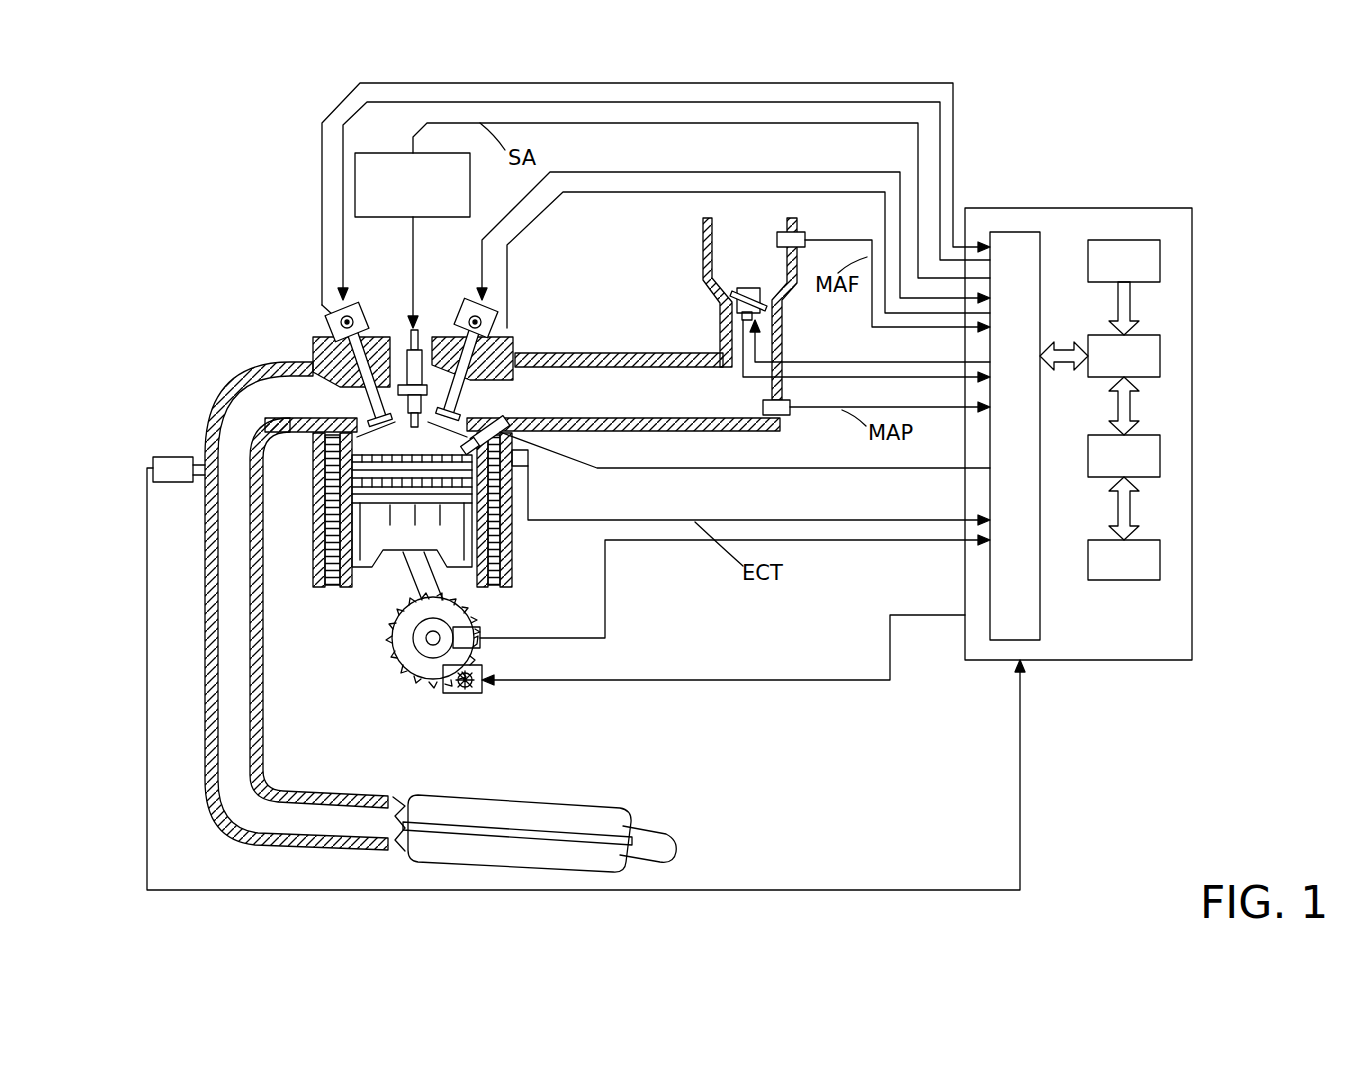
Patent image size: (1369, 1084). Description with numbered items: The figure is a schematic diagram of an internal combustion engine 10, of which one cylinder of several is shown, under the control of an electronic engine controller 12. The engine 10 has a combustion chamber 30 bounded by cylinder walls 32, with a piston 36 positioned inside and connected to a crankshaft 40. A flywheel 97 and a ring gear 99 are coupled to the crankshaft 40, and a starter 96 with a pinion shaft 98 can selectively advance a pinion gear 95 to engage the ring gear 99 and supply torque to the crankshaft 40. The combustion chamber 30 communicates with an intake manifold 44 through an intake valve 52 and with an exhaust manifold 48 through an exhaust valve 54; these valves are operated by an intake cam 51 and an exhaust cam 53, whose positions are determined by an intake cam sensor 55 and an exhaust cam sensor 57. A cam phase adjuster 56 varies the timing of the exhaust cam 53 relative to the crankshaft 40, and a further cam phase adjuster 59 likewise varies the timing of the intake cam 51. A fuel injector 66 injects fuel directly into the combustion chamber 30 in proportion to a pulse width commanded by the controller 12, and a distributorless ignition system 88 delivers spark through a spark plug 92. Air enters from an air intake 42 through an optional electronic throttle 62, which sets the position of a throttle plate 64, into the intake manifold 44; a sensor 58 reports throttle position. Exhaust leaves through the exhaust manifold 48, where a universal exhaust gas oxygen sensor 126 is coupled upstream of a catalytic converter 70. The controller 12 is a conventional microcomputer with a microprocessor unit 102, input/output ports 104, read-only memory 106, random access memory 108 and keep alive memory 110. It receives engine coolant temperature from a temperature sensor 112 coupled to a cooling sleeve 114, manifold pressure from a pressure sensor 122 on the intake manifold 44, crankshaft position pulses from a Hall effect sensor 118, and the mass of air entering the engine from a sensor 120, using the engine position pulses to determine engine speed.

The internal combustion engine 10 is at (246, 288).
The electronic engine controller 12 is at (1196, 208).
The combustion chamber 30 is at (340, 532).
The cylinder walls 32 is at (357, 572).
The piston 36 is at (398, 540).
The crankshaft 40 is at (420, 667).
The air intake 42 is at (760, 265).
The intake manifold 44 is at (700, 405).
The exhaust manifold 48 is at (290, 409).
The intake cam 51 is at (463, 300).
The intake valve 52 is at (457, 400).
The exhaust cam 53 is at (358, 298).
The exhaust valve 54 is at (360, 403).
The intake cam sensor 55 is at (497, 326).
The exhaust cam phase adjuster 56 is at (365, 323).
The exhaust cam sensor 57 is at (322, 335).
The throttle position sensor 58 is at (728, 318).
The cam phase adjuster 59 is at (469, 322).
The electronic throttle 62 is at (768, 300).
The throttle plate 64 is at (730, 300).
The fuel injector 66 is at (518, 440).
The catalytic converter 70 is at (425, 797).
The distributorless ignition system 88 is at (372, 153).
The spark plug 92 is at (428, 327).
The pinion gear 95 is at (472, 690).
The starter 96 is at (480, 693).
The flywheel 97 is at (398, 645).
The pinion shaft 98 is at (457, 697).
The ring gear 99 is at (430, 677).
The microprocessor unit 102 is at (1160, 355).
The input/output ports 104 is at (1040, 238).
The read-only memory 106 is at (1160, 262).
The random access memory 108 is at (1160, 455).
The keep alive memory 110 is at (1160, 560).
The temperature sensor 112 is at (528, 465).
The cooling sleeve 114 is at (500, 538).
The Hall effect sensor 118 is at (482, 628).
The air mass sensor 120 is at (800, 232).
The pressure sensor 122 is at (786, 415).
The Universal Exhaust Gas Oxygen sensor 126 is at (153, 462).